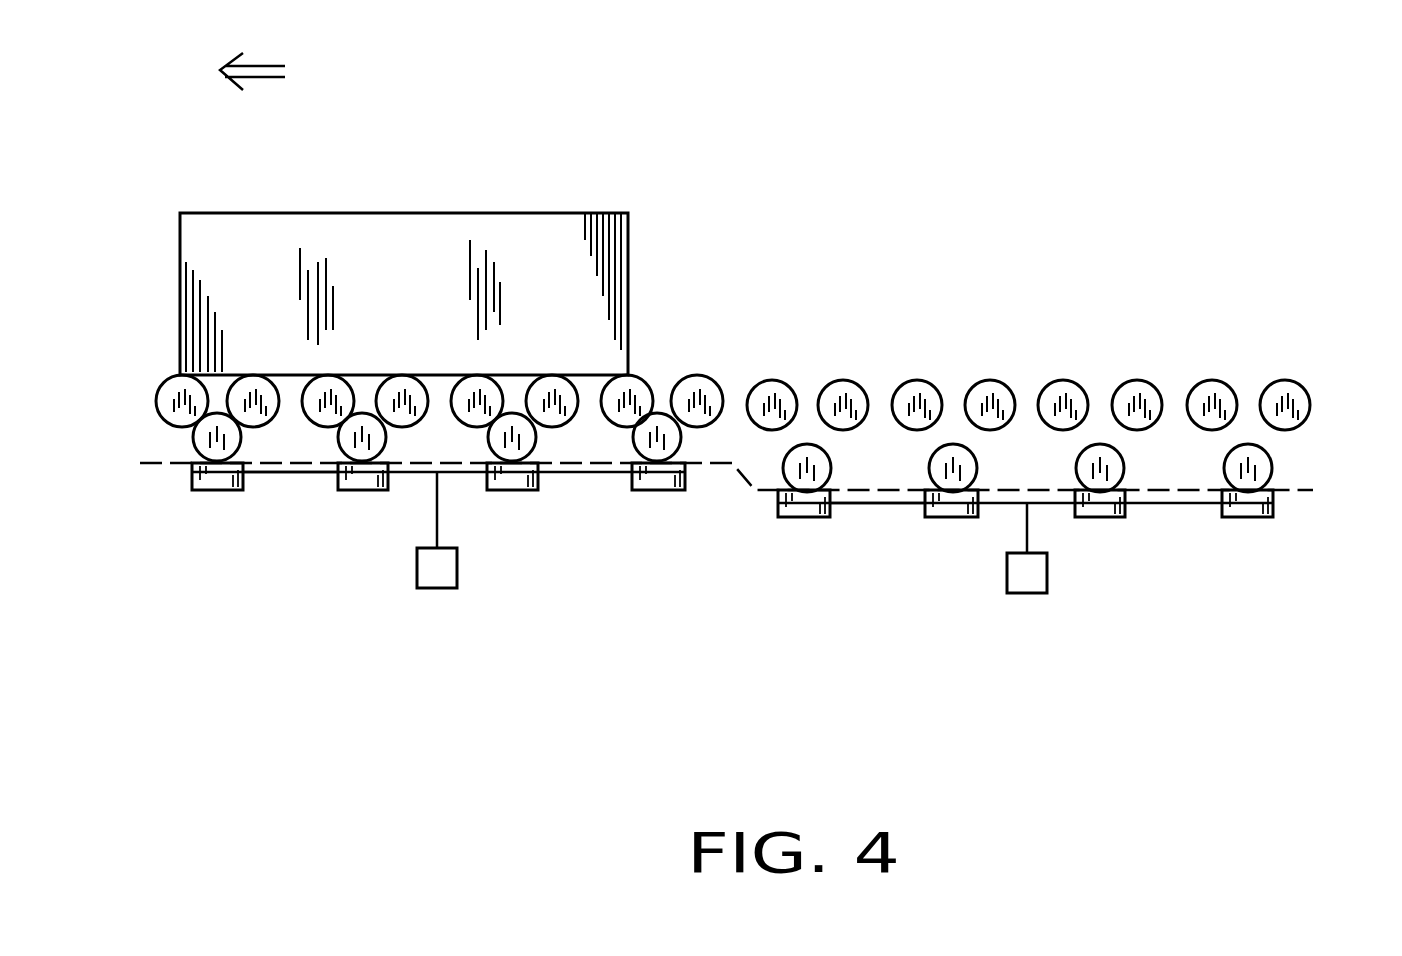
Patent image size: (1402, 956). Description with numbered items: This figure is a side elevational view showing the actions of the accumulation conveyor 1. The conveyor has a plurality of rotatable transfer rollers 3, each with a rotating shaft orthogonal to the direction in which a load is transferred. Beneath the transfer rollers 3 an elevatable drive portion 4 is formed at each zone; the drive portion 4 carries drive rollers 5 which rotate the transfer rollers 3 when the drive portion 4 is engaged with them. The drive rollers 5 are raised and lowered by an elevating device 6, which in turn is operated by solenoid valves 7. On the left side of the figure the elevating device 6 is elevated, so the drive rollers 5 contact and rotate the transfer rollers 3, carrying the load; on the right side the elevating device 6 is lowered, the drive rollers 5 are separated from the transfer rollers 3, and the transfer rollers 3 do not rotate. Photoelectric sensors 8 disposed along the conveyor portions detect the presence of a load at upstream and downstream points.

The accumulation conveyor 1 is at (1288, 345).
The transfer rollers 3 is at (637, 391).
The drive portion 4 is at (360, 491).
The drive rollers 5 is at (640, 444).
The elevating device 6 is at (513, 491).
The solenoid valves 7 is at (1027, 678).
The photoelectric sensors 8 is at (423, 193).